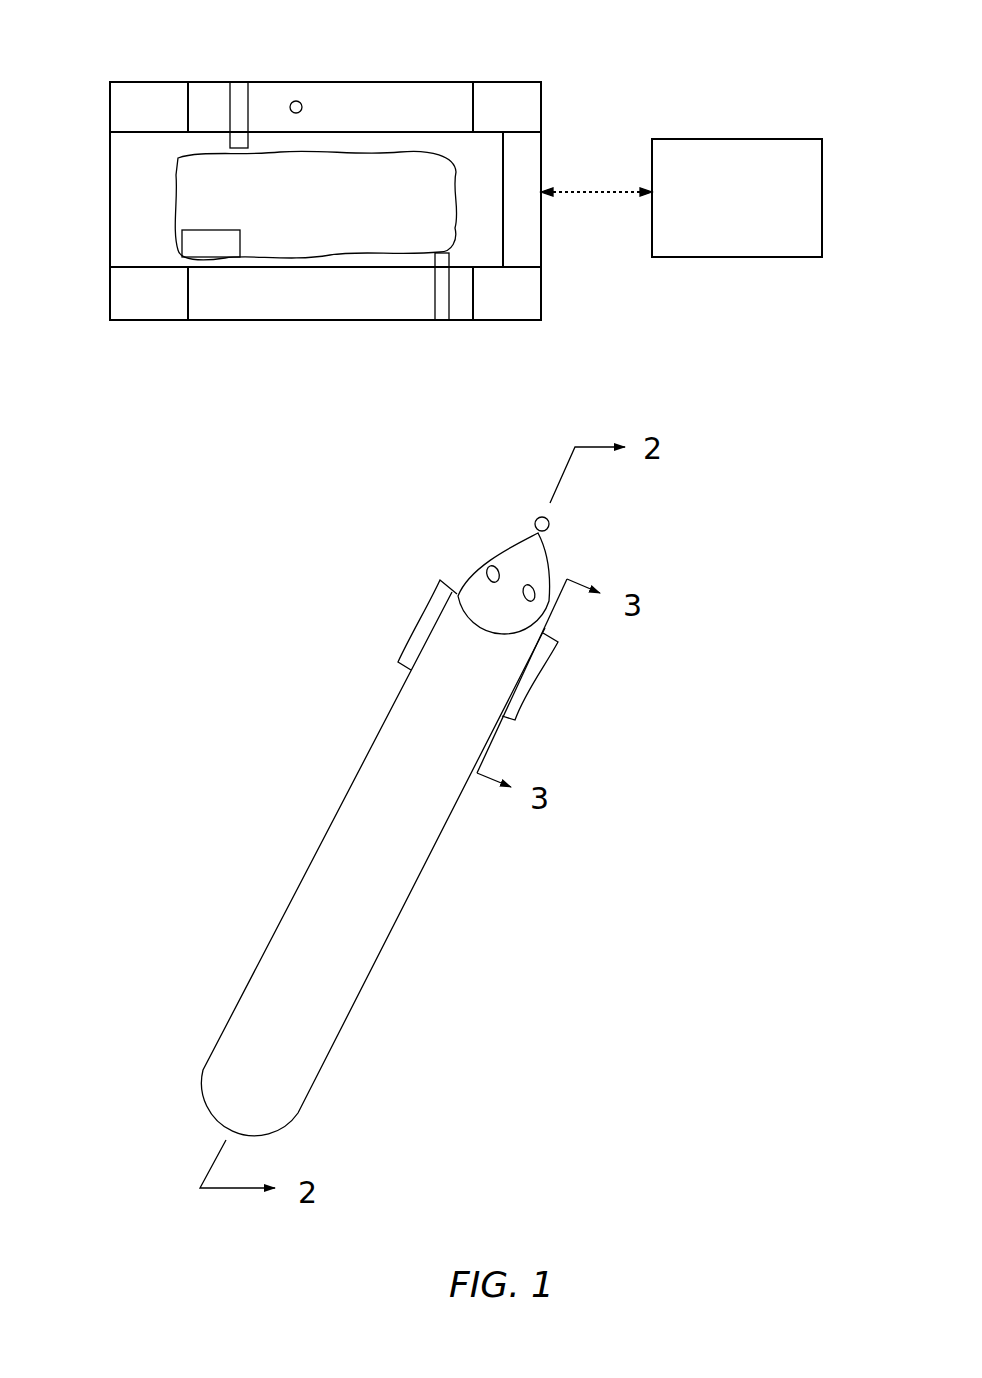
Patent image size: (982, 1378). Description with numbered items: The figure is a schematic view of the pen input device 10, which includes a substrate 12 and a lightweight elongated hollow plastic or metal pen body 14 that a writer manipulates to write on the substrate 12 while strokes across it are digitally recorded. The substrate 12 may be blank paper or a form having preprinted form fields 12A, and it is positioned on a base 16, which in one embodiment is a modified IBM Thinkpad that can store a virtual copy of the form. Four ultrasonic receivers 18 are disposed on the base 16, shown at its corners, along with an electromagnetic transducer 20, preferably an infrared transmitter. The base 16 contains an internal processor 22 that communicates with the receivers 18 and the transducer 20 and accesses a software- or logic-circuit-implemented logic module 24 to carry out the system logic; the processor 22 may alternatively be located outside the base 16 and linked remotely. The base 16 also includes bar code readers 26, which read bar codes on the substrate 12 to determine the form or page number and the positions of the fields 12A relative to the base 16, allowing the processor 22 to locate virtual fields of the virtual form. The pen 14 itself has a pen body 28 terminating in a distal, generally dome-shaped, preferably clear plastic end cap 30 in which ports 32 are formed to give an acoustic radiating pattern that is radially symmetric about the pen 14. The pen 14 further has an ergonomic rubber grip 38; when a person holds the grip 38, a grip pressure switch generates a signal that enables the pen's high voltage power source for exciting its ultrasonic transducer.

The pen input device 10 is at (478, 438).
The substrate 12 is at (315, 205).
The form fields 12A is at (193, 248).
The pen body 14 is at (423, 800).
The base 16 is at (109, 158).
The ultrasonic receivers 18 is at (137, 81).
The electromagnetic transducer 20 is at (297, 101).
The internal processor 22 is at (541, 230).
The logic module 24 is at (780, 138).
The bar code readers 26 is at (250, 141).
The pen body 28 is at (425, 803).
The end cap 30 is at (547, 552).
The ports 32 is at (492, 565).
The rubber grip 38 is at (548, 650).